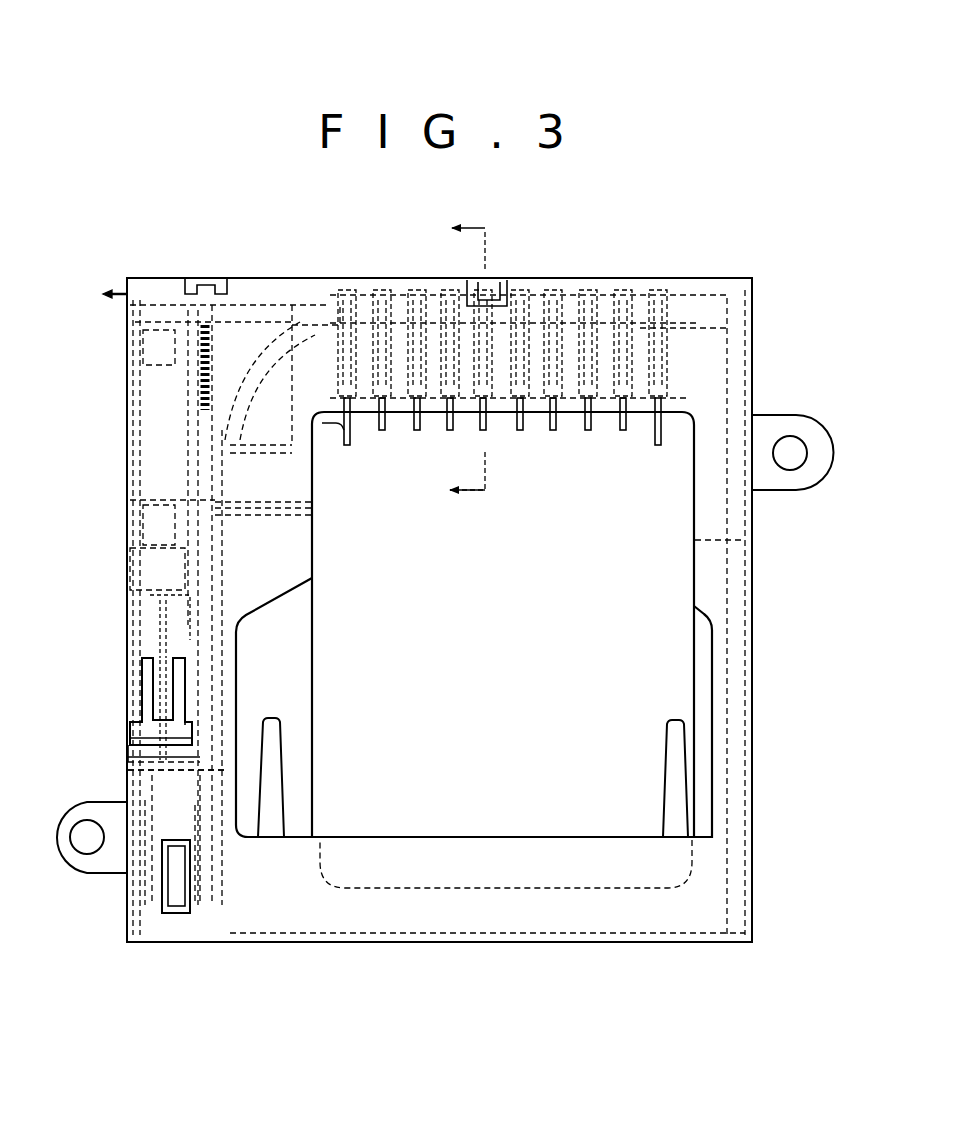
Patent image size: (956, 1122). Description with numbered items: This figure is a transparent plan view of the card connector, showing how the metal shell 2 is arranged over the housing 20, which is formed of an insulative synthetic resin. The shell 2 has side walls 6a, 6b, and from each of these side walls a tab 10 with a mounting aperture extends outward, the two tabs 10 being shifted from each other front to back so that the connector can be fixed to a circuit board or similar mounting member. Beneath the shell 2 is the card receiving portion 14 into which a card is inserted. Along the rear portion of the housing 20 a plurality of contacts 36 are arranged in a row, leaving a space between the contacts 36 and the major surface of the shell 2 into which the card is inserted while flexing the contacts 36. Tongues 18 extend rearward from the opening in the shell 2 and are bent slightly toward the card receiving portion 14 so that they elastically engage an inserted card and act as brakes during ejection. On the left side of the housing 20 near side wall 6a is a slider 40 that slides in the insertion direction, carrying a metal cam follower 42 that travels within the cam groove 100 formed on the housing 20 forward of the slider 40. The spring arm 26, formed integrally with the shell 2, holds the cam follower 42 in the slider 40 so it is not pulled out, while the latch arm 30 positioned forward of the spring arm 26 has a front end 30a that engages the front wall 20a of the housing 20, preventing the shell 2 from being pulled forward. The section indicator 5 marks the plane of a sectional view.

The shell 2 is at (720, 277).
The section line V-V 5 is at (469, 362).
The side wall 6a is at (128, 597).
The side wall 6b is at (745, 672).
The tab 10 is at (88, 874).
The card receiving portion 14 is at (484, 944).
The tongue 18 is at (270, 780).
The housing 20 is at (318, 628).
The front wall 20a is at (177, 933).
The spring arm 26 is at (195, 708).
The latch arm 30 is at (166, 912).
The front end 30a is at (190, 912).
The contact 36 is at (584, 434).
The slider 40 is at (148, 566).
The cam follower 42 is at (123, 767).
The cam groove 100 is at (123, 790).